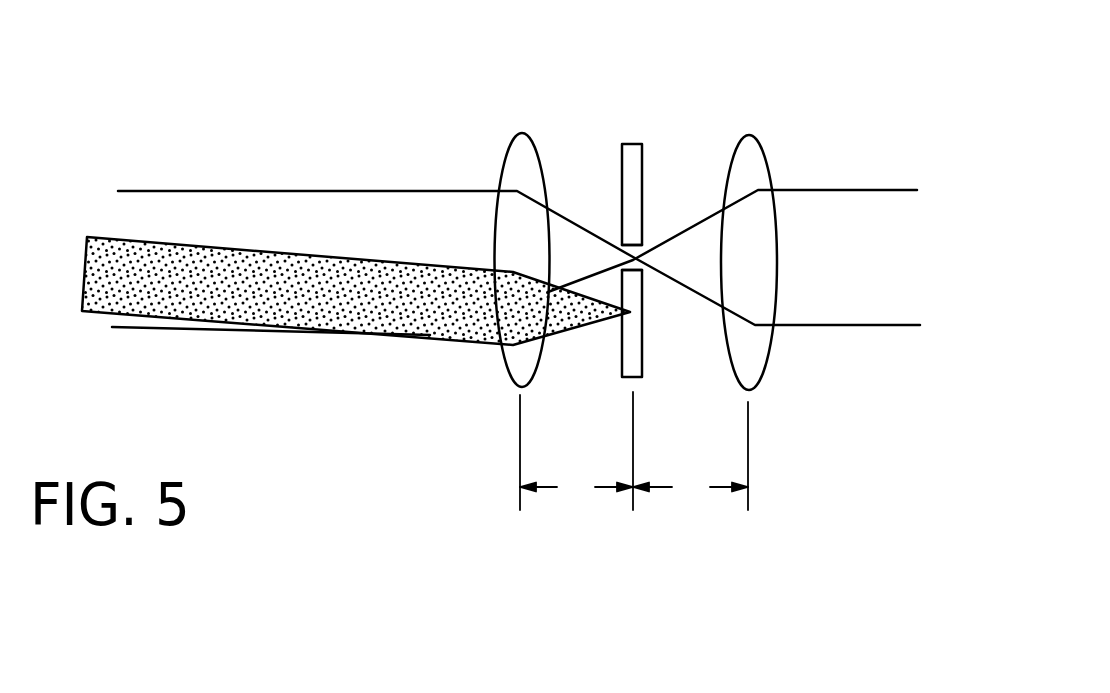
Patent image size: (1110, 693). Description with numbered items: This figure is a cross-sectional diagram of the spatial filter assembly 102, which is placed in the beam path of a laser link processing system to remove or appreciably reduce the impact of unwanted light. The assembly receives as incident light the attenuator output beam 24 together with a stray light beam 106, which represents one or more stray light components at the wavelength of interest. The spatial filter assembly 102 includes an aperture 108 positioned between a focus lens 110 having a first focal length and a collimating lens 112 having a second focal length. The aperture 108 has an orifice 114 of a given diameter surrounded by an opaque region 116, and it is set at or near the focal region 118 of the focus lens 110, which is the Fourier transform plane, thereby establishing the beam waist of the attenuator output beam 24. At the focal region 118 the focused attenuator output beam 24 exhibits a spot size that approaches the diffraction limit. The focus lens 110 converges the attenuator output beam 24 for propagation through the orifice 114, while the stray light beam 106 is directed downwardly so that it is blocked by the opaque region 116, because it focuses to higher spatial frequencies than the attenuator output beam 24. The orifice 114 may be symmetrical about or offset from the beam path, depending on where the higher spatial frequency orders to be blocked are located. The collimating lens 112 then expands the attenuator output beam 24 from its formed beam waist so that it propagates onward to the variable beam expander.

The spatial filter assembly 102 is at (529, 548).
The attenuator output beam 24 is at (207, 210).
The stray light beam 106 is at (102, 277).
The aperture 108 is at (658, 362).
The focus lens 110 is at (515, 147).
The collimating lens 112 is at (750, 135).
The orifice 114 is at (638, 257).
The opaque region 116 is at (620, 343).
The focal region 118 is at (632, 143).